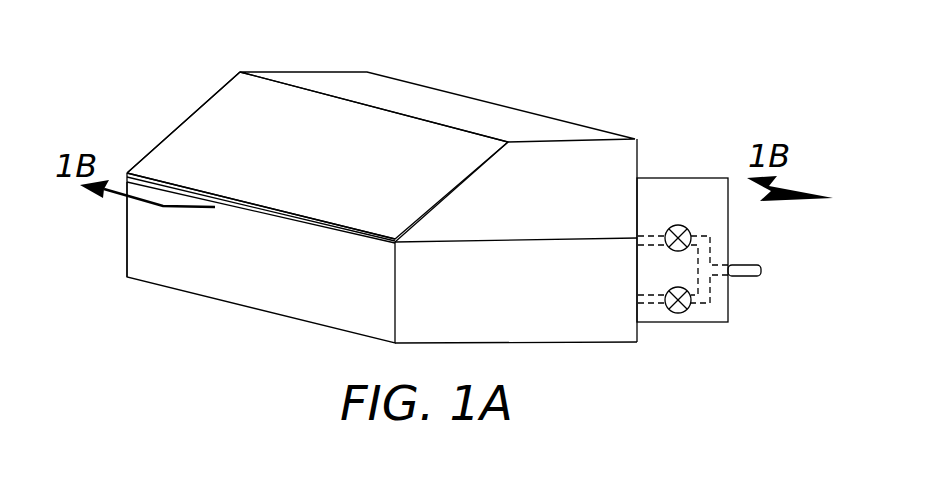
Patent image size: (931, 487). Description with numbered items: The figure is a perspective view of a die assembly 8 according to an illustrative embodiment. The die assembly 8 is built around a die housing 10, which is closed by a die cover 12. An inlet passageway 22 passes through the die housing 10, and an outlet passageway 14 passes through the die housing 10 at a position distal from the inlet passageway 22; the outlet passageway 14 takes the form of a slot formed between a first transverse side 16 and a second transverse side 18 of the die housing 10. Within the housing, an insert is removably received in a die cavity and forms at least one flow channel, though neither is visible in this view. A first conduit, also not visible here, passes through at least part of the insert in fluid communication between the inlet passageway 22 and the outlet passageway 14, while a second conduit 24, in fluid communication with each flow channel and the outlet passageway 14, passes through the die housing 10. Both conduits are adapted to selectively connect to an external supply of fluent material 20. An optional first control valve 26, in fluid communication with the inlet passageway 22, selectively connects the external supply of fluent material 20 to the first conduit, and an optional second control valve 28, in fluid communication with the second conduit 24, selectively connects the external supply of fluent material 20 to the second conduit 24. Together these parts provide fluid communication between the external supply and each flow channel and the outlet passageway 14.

The die assembly 8 is at (214, 30).
The die housing 10 is at (234, 268).
The die cover 12 is at (322, 171).
The outlet passageway 14 is at (348, 230).
The first transverse side 16 is at (615, 330).
The second transverse side 18 is at (127, 245).
The external supply of fluent material 20 is at (748, 278).
The inlet passageway 22 is at (655, 232).
The second conduit 24 is at (660, 293).
The first control valve 26 is at (687, 227).
The second control valve 28 is at (680, 317).